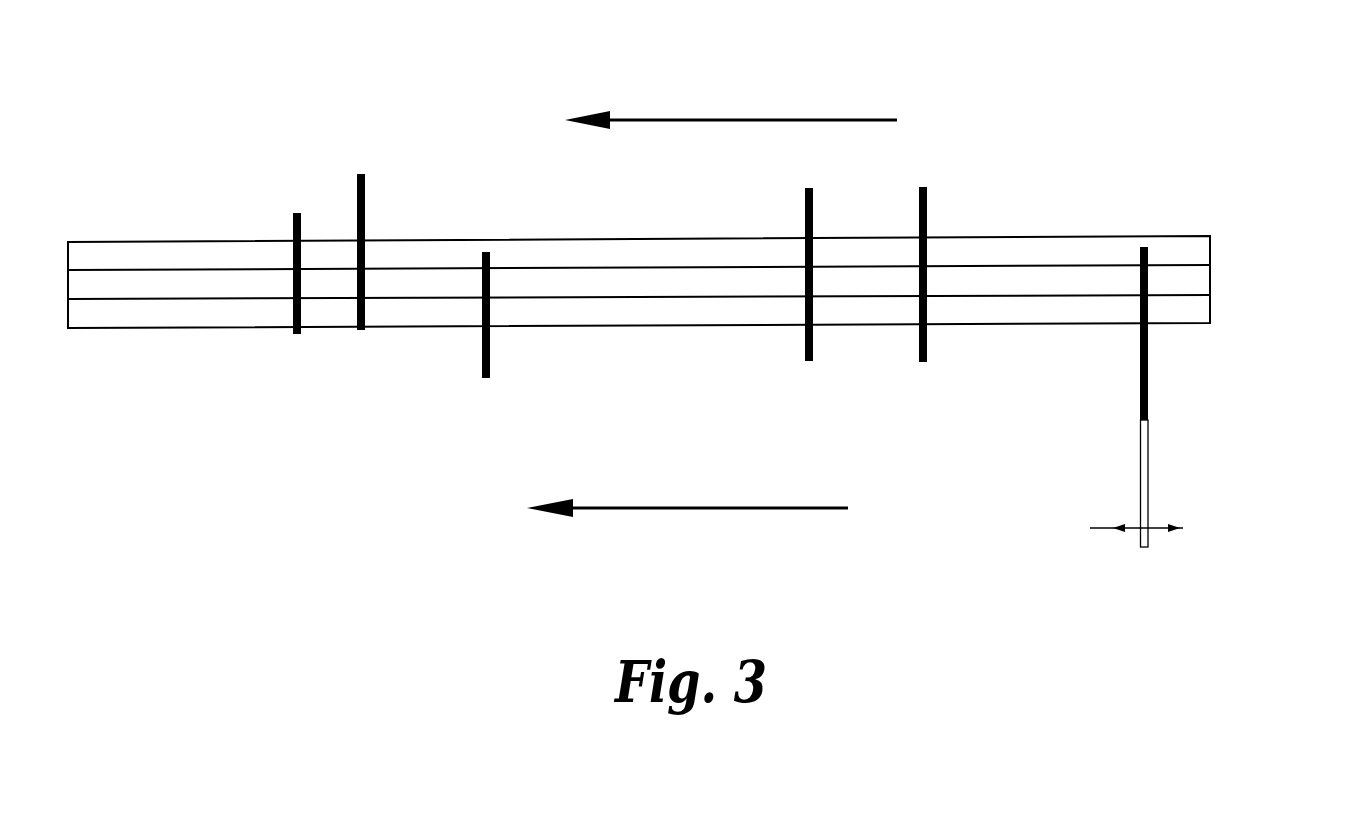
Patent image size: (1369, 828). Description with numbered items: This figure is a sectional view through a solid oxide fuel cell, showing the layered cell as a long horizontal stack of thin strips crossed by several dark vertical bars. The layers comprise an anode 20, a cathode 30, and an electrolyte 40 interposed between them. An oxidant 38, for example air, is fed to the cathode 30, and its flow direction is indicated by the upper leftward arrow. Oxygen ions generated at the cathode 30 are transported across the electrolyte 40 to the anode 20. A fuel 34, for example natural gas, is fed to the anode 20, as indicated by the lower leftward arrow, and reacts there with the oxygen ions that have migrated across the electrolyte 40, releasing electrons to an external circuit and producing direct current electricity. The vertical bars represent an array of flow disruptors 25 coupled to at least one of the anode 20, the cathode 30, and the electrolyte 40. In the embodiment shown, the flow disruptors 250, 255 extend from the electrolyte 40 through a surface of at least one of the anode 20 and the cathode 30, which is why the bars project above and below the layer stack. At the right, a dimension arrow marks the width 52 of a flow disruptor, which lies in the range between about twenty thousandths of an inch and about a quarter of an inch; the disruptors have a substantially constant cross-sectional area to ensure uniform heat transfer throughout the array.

The anode 20 is at (583, 318).
The array of flow disruptors 25 is at (927, 202).
The cathode 30 is at (1085, 245).
The fuel 34 is at (687, 494).
The oxidant 38 is at (731, 104).
The electrolyte 40 is at (1200, 280).
The width 52 is at (1183, 498).
The flow disruptor 250 is at (357, 190).
The flow disruptor 255 is at (483, 362).